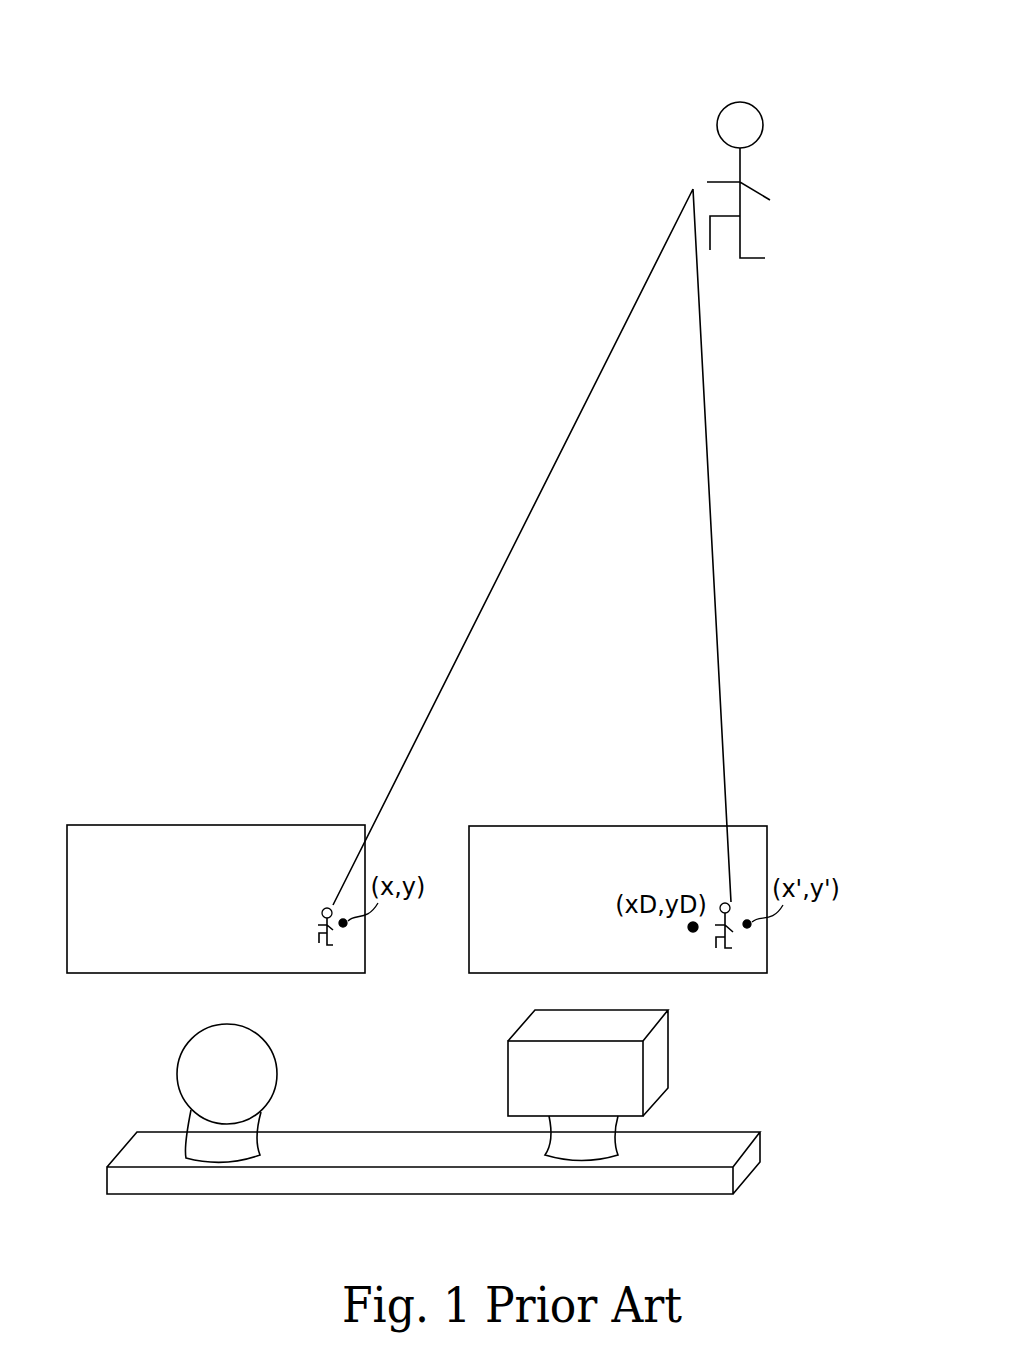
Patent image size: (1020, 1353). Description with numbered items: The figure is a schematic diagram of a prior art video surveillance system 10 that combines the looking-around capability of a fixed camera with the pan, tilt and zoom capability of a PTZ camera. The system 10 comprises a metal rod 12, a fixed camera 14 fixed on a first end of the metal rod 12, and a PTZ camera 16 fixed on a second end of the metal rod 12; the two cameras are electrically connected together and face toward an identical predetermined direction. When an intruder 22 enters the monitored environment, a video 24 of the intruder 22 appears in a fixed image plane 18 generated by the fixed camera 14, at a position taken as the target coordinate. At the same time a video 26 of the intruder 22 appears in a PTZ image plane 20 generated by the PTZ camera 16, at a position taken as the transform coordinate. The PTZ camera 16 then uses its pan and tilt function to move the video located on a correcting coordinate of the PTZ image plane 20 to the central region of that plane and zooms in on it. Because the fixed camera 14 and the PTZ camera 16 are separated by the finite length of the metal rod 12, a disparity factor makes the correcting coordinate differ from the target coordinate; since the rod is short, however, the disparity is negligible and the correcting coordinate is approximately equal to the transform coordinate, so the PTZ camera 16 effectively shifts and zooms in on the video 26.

The video surveillance system 10 is at (254, 96).
The metal rod 12 is at (762, 1135).
The fixed camera 14 is at (188, 1068).
The PTZ camera 16 is at (653, 1067).
The fixed image plane 18 is at (86, 825).
The PTZ image plane 20 is at (767, 832).
The intruder 22 is at (752, 70).
The video of the intruder in the fixed image plane 24 is at (343, 972).
The video of the intruder in the PTZ image plane 26 is at (742, 981).